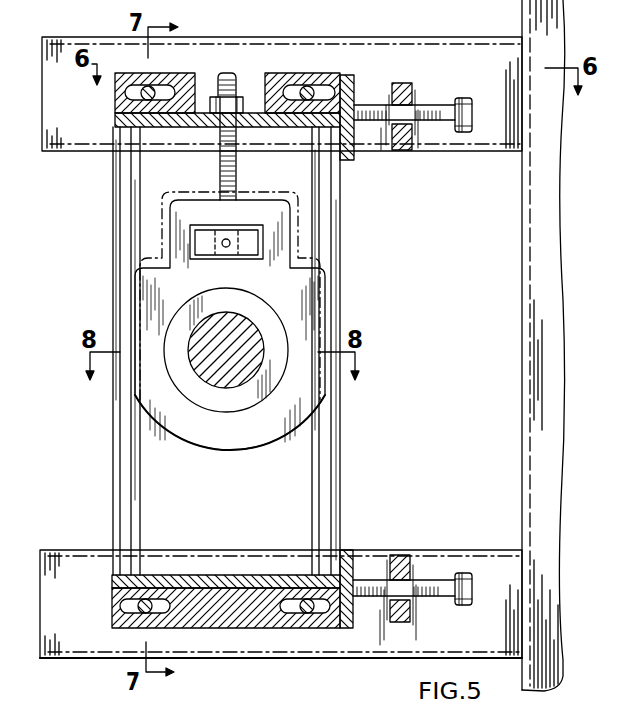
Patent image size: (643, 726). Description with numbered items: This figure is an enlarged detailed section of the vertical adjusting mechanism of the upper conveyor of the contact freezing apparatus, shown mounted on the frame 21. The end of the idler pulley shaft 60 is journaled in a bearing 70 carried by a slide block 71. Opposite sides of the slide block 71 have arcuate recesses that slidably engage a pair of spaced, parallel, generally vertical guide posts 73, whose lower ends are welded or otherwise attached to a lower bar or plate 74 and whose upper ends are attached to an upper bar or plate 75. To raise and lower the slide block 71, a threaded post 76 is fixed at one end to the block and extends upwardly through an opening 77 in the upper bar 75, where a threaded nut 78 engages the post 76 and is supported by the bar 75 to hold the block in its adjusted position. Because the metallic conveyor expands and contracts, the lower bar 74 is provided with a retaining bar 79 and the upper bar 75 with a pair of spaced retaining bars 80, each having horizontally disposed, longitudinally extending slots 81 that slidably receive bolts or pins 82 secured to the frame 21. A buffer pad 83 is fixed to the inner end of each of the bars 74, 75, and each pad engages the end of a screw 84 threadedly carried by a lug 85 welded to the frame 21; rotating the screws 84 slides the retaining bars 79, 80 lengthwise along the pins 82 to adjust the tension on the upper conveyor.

The frame 21 is at (443, 53).
The shaft 60 is at (235, 382).
The bearing 70 is at (257, 315).
The slide block 71 is at (182, 422).
The guide posts 73 is at (122, 217).
The lower bar or plate 74 is at (207, 575).
The upper bar or plate 75 is at (167, 128).
The threaded post 76 is at (240, 181).
The opening 77 is at (244, 120).
The threaded nut 78 is at (240, 72).
The retaining bar 79 is at (214, 618).
The retaining bars 80 is at (190, 73).
The slots 81 is at (163, 90).
The bolts or pins 82 is at (116, 99).
The buffer pad 83 is at (353, 78).
The screw 84 is at (440, 117).
The lug 85 is at (394, 152).